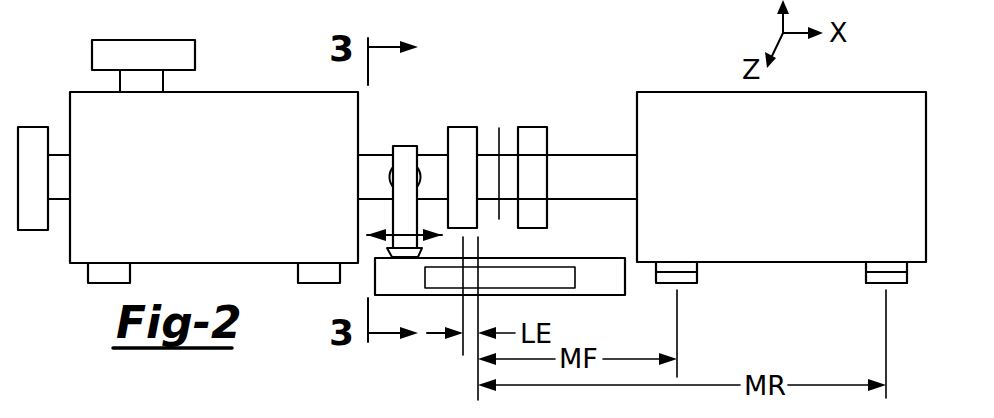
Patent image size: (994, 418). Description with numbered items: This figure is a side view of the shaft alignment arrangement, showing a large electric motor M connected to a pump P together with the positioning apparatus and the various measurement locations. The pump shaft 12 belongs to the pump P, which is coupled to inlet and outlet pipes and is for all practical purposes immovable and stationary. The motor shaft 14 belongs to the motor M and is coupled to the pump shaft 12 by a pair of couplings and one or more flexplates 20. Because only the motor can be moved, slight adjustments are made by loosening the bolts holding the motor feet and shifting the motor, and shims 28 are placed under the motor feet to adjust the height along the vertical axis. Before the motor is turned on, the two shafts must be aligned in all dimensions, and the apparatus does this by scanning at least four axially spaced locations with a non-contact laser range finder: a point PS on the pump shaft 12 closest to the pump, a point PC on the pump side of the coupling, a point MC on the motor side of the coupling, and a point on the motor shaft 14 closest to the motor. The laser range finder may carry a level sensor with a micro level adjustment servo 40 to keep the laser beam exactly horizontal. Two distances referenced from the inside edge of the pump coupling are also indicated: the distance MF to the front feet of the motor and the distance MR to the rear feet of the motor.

The pump shaft 12 is at (433, 155).
The motor shaft 14 is at (585, 177).
The flexplate 20 is at (499, 128).
The shims 28 is at (907, 277).
The micro level adjustment servo 40 is at (548, 0).
The pump P is at (188, 161).
The motor M is at (781, 177).
The pump side of coupling measurement position PC is at (470, 177).
The motor side of coupling measurement position MC is at (539, 177).
The pump shaft measurement position PS is at (377, 177).
The front feet distance MF is at (697, 266).
The rear feet distance MR is at (866, 266).